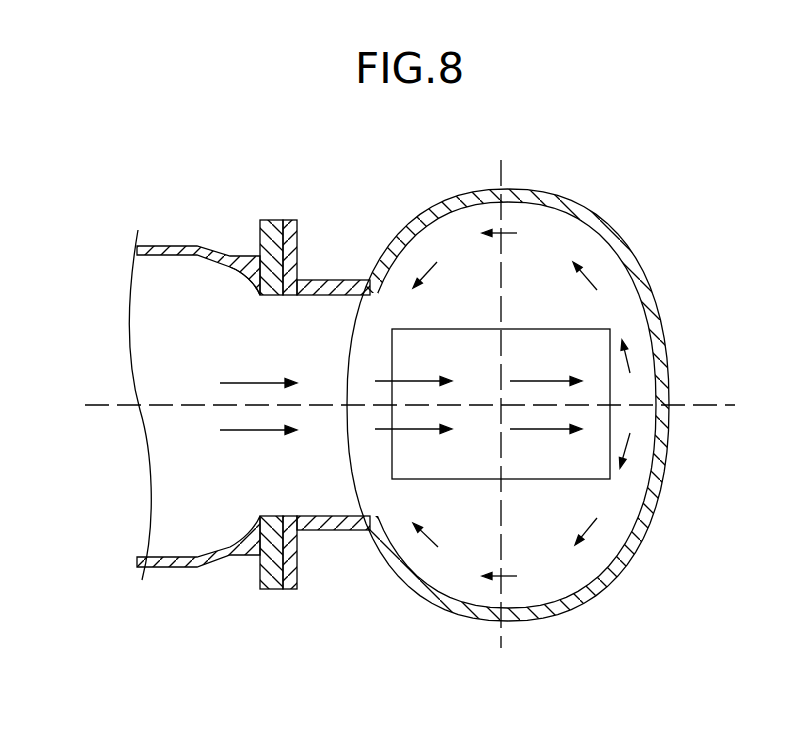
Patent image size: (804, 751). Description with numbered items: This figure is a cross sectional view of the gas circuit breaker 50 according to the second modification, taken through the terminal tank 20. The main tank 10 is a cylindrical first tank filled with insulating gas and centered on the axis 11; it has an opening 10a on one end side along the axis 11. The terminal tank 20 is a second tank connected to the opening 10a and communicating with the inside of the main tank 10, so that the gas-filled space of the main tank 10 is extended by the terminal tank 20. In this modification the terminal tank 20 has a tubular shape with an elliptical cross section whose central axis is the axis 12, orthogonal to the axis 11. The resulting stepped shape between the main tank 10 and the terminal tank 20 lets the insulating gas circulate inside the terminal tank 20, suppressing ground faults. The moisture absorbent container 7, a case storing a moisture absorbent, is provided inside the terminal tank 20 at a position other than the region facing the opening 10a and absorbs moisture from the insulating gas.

The gas circuit breaker 50 is at (358, 187).
The terminal tank 20 is at (614, 229).
The main tank 10 is at (173, 245).
The opening 10a is at (262, 294).
The moisture absorbent container 7 is at (461, 329).
The axis 11 is at (711, 402).
The axis 12 is at (502, 406).